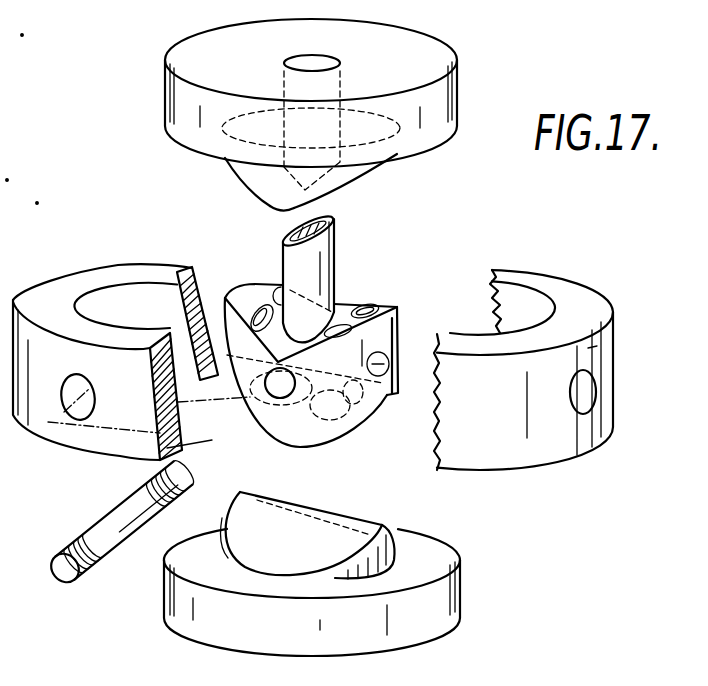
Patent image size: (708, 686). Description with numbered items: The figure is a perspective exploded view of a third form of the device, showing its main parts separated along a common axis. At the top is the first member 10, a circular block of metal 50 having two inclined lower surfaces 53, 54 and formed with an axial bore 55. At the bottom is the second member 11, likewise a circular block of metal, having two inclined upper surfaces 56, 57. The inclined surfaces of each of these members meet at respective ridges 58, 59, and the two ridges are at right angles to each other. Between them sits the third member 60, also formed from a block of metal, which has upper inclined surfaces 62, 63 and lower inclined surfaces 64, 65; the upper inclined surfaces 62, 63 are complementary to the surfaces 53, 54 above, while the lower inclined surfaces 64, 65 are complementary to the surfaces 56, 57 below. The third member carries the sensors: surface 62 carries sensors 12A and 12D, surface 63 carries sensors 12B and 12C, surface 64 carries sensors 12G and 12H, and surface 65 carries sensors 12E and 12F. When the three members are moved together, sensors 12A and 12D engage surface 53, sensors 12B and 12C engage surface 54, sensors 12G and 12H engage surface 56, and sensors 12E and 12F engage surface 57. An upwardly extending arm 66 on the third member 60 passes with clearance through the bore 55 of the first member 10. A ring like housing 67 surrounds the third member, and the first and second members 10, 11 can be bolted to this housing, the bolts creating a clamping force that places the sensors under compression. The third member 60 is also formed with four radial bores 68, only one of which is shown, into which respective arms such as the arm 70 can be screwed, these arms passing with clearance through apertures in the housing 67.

The first member 10 is at (450, 108).
The second member 11 is at (472, 590).
The sensor 12A is at (277, 285).
The sensor 12B is at (372, 304).
The sensor 12C is at (341, 324).
The sensor 12D is at (227, 297).
The sensor 12E is at (357, 402).
The sensor 12F is at (290, 405).
The sensor 12G is at (268, 393).
The sensor 12H is at (334, 425).
The circular block of metal 50 is at (432, 58).
The inclined lower surface 53 is at (237, 184).
The inclined lower surface 54 is at (372, 165).
The axial bore 55 is at (288, 58).
The inclined upper surface 56 is at (260, 543).
The inclined upper surface 57 is at (331, 581).
The ridge 58 is at (280, 211).
The ridge 59 is at (328, 502).
The third member 60 is at (340, 343).
The upper inclined surface 62 is at (131, 343).
The upper inclined surface 63 is at (388, 307).
The lower inclined surface 64 is at (163, 405).
The lower inclined surface 65 is at (380, 397).
The upwardly extending arm 66 is at (327, 214).
The ring like housing 67 is at (617, 332).
The radial bore 68 is at (388, 363).
The arm 70 is at (105, 524).